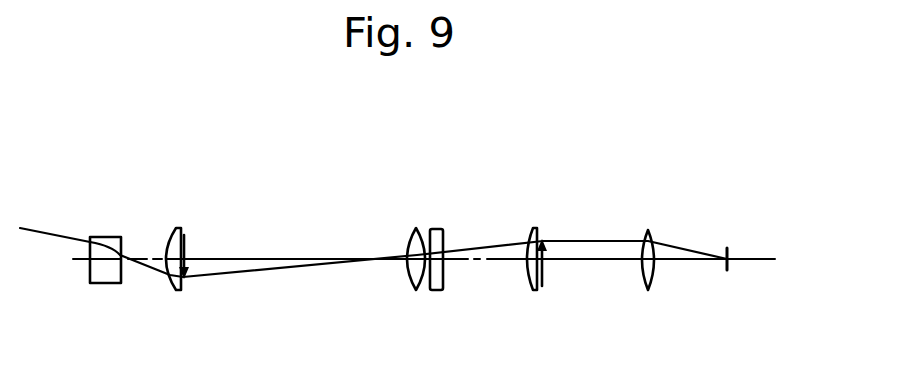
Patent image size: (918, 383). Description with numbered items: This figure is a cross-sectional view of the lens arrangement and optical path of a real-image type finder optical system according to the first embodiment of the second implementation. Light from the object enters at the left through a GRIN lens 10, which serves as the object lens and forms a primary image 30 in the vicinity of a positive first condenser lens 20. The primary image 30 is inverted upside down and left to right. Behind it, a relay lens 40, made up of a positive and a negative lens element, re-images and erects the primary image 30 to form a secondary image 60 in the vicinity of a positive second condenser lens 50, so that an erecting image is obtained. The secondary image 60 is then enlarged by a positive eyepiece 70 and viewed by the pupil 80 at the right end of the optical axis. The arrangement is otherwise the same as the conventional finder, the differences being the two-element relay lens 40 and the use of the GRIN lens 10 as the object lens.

The GRIN lens 10 is at (110, 283).
The first condenser lens 20 is at (167, 232).
The primary image 30 is at (186, 246).
The relay lens 40 is at (453, 200).
The second condenser lens 50 is at (527, 229).
The secondary image 60 is at (544, 240).
The eyepiece 70 is at (655, 278).
The pupil 80 is at (727, 248).